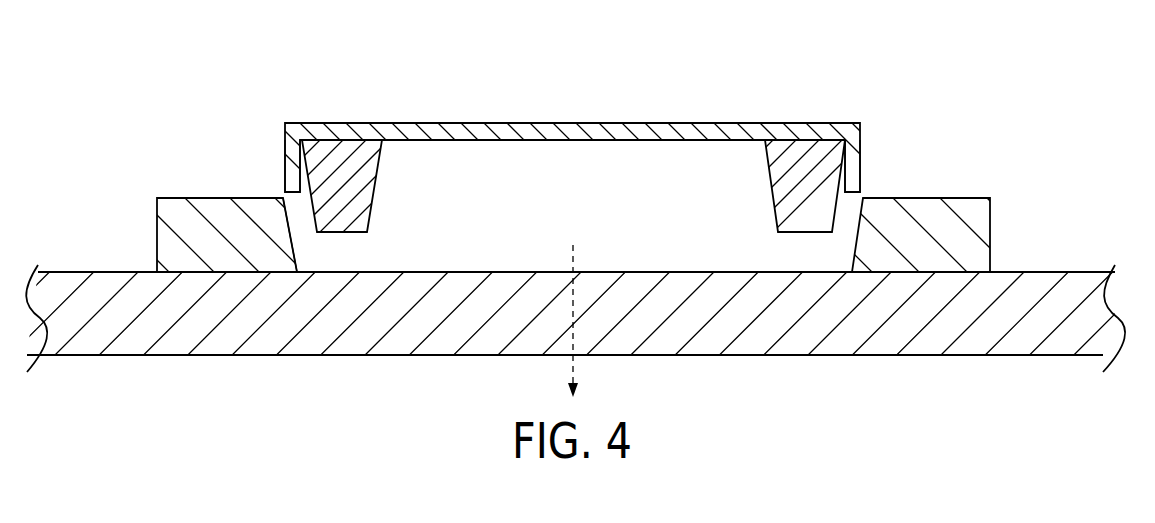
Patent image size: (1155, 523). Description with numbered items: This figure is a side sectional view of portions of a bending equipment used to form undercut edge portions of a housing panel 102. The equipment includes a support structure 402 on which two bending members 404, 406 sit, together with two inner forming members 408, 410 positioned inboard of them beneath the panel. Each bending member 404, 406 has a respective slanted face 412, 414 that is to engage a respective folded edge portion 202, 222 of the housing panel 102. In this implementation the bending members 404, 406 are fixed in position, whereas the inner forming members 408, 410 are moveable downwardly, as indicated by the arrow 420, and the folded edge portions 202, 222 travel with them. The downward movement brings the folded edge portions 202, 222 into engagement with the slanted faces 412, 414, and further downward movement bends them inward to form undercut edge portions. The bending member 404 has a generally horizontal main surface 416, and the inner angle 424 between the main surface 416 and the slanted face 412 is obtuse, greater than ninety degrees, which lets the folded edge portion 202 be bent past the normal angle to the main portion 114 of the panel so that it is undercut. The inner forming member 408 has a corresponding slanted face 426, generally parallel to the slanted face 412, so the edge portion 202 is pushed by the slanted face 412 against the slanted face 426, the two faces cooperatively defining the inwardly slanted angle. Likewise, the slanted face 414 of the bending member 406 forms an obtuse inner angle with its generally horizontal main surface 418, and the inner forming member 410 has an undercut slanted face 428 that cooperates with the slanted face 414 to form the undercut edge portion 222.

The housing panel 102 is at (590, 110).
The main portion 114 is at (572, 123).
The folded edge portion 202 is at (293, 170).
The folded edge portion 222 is at (862, 160).
The support structure 402 is at (132, 347).
The bending member 404 is at (222, 210).
The bending member 406 is at (938, 210).
The inner forming member 408 is at (367, 182).
The inner forming member 410 is at (783, 180).
The slanted face 412 is at (283, 200).
The slanted face 414 is at (863, 200).
The main surface 416 is at (176, 200).
The main surface 418 is at (968, 198).
The arrow 420 is at (573, 258).
The inner angle 424 is at (283, 223).
The slanted face 426 is at (309, 215).
The slanted face 428 is at (836, 220).